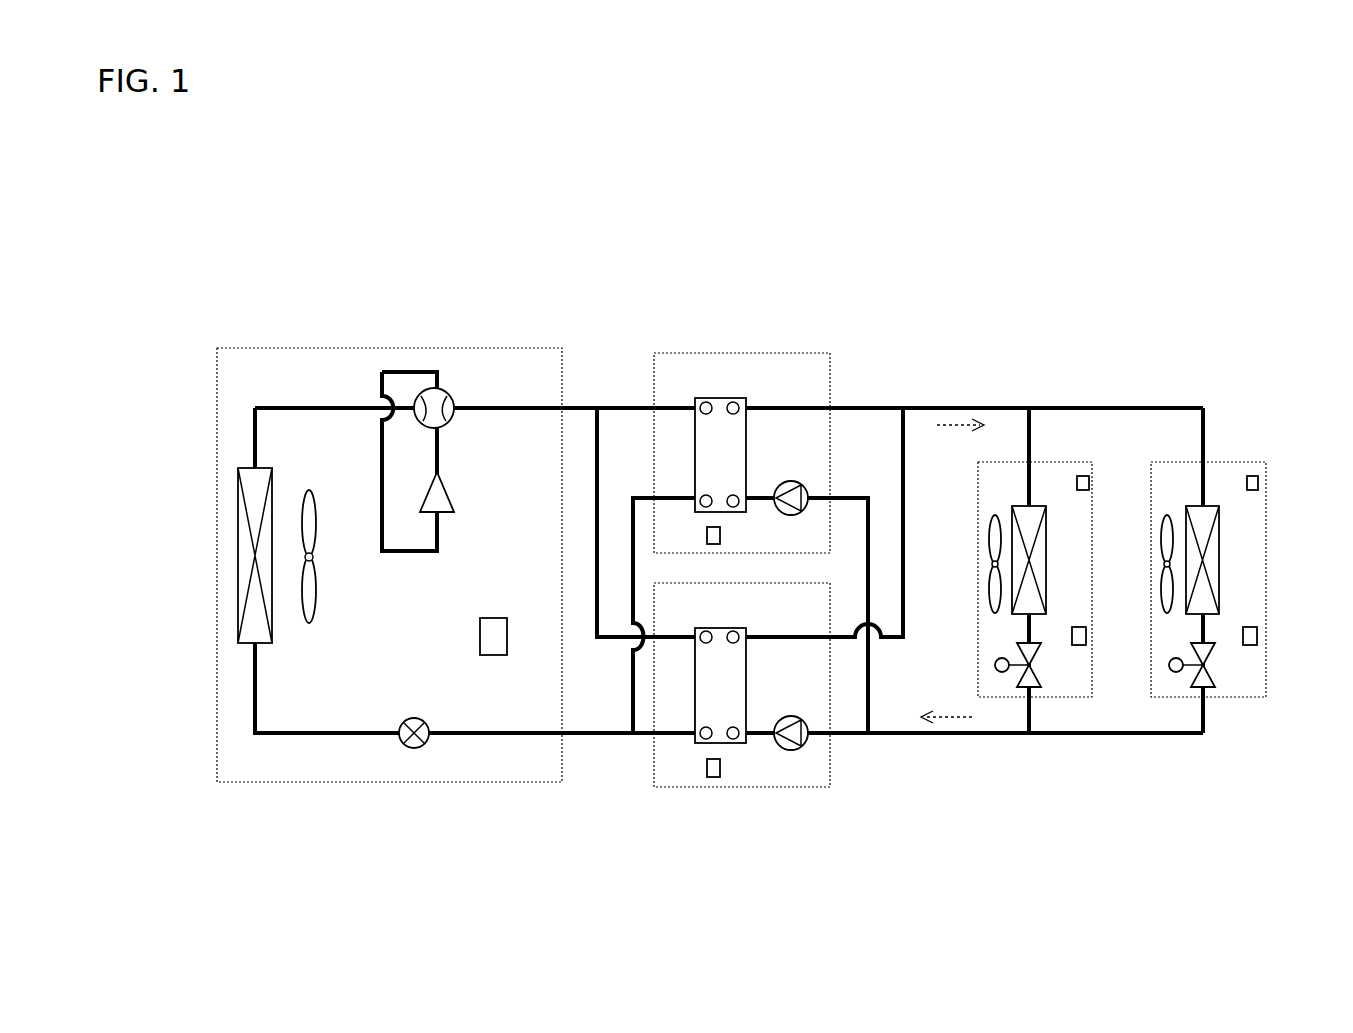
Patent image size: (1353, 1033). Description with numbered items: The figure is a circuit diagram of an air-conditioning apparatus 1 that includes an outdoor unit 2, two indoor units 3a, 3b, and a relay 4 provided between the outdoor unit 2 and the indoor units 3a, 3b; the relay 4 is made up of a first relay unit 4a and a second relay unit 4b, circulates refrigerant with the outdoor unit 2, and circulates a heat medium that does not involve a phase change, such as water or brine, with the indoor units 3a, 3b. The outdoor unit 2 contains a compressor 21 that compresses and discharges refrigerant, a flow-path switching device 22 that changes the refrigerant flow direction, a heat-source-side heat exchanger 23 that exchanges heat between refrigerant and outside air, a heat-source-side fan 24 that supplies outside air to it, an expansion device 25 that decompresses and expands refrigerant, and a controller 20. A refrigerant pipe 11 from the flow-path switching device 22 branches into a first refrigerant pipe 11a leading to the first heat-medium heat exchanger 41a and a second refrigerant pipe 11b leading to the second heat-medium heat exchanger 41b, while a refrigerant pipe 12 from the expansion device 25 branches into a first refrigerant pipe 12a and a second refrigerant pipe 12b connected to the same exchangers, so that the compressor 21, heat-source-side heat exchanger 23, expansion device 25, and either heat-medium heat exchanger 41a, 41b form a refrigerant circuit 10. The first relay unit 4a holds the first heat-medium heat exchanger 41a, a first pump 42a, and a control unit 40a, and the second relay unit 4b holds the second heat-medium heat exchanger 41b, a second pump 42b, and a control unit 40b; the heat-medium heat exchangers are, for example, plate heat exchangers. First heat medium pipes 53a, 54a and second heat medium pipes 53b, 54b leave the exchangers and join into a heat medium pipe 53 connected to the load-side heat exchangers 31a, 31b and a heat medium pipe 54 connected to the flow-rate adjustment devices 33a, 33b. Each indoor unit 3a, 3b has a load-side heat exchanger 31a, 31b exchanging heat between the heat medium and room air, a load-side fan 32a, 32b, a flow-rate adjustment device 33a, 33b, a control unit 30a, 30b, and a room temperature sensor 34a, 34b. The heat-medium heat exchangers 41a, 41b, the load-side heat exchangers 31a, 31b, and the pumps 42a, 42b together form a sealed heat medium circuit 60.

The air-conditioning apparatus 1 is at (1066, 261).
The outdoor unit 2 is at (280, 347).
The indoor unit 3a is at (1040, 461).
The indoor unit 3b is at (1215, 461).
The relay 4 is at (794, 322).
The first relay unit 4a is at (676, 792).
The second relay unit 4b is at (677, 352).
The refrigerant circuit 10 is at (517, 423).
The refrigerant pipe 11 is at (582, 404).
The first refrigerant pipe 11a is at (600, 455).
The second refrigerant pipe 11b is at (628, 404).
The refrigerant pipe 12 is at (581, 725).
The first refrigerant pipe 12a is at (643, 741).
The second refrigerant pipe 12b is at (628, 500).
The controller 20 is at (492, 614).
The compressor 21 is at (430, 484).
The flow-path switching device 22 is at (447, 394).
The heat-source-side heat exchanger 23 is at (273, 479).
The heat-source-side fan 24 is at (326, 601).
The expansion device 25 is at (416, 716).
The control unit 30a is at (1112, 642).
The control unit 30b is at (1284, 642).
The load-side heat exchanger 31a is at (1062, 560).
The load-side heat exchanger 31b is at (1236, 560).
The load-side fan 32a is at (988, 527).
The load-side fan 32b is at (1160, 527).
The flow-rate adjustment device 33a is at (992, 668).
The flow-rate adjustment device 33b is at (1166, 668).
The room temperature sensor 34a is at (1112, 486).
The room temperature sensor 34b is at (1284, 486).
The control unit 40a is at (722, 770).
The control unit 40b is at (722, 536).
The first heat-medium heat exchanger 41a is at (725, 627).
The second heat-medium heat exchanger 41b is at (725, 397).
The first pump 42a is at (790, 714).
The second pump 42b is at (790, 481).
The heat medium pipe 53 is at (938, 405).
The first heat medium pipe 53a is at (902, 440).
The second heat medium pipe 53b is at (860, 405).
The heat medium pipe 54 is at (940, 741).
The first heat medium pipe 54a is at (856, 741).
The second heat medium pipe 54b is at (841, 497).
The heat medium circuit 60 is at (990, 746).